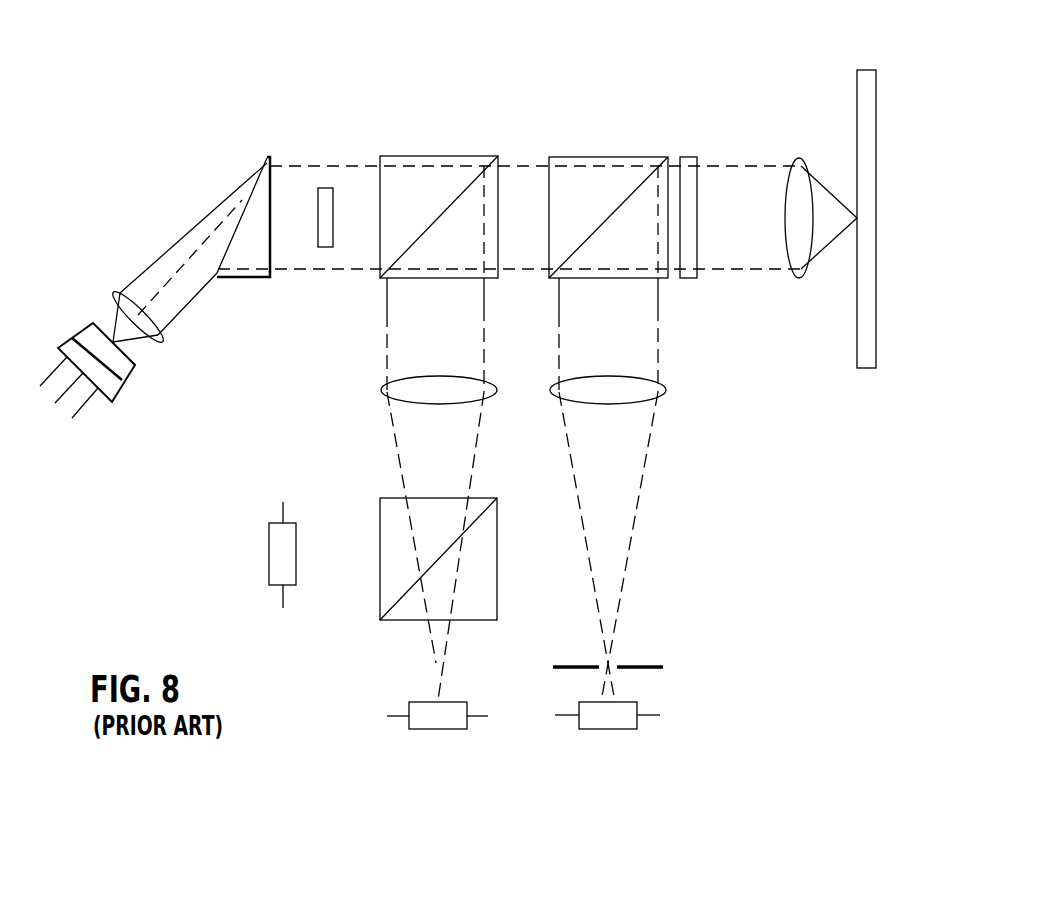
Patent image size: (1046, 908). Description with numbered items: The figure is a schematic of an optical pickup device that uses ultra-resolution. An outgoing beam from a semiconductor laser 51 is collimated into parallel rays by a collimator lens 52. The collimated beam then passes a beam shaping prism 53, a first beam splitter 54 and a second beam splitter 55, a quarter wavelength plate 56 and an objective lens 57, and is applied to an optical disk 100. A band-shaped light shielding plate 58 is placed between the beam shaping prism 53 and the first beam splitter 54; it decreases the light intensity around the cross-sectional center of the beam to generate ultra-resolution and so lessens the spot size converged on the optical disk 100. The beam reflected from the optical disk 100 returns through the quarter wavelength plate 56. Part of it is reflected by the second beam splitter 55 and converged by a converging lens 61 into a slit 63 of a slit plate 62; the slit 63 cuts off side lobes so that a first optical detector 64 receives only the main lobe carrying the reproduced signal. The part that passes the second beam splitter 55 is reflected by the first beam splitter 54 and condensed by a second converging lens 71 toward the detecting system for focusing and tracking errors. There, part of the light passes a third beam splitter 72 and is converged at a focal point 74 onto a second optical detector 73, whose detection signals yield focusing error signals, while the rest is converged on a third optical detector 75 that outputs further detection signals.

The semiconductor laser 51 is at (70, 337).
The collimator lens 52 is at (115, 297).
The beam shaping prism 53 is at (248, 200).
The first beam splitter 54 is at (440, 156).
The second beam splitter 55 is at (610, 157).
The quarter wavelength plate 56 is at (692, 157).
The objective lens 57 is at (800, 158).
The band-shaped light shielding plate 58 is at (328, 188).
The converging lens 61 is at (668, 390).
The slit plate 62 is at (660, 667).
The slit 63 is at (622, 656).
The first optical detector 64 is at (633, 727).
The second converging lens 71 is at (382, 388).
The third beam splitter 72 is at (487, 583).
The second optical detector 73 is at (425, 725).
The focal point 74 is at (424, 667).
The third optical detector 75 is at (270, 558).
The optical disk 100 is at (868, 70).